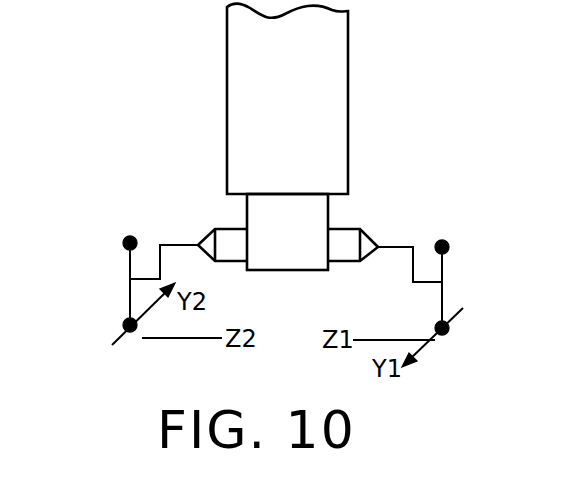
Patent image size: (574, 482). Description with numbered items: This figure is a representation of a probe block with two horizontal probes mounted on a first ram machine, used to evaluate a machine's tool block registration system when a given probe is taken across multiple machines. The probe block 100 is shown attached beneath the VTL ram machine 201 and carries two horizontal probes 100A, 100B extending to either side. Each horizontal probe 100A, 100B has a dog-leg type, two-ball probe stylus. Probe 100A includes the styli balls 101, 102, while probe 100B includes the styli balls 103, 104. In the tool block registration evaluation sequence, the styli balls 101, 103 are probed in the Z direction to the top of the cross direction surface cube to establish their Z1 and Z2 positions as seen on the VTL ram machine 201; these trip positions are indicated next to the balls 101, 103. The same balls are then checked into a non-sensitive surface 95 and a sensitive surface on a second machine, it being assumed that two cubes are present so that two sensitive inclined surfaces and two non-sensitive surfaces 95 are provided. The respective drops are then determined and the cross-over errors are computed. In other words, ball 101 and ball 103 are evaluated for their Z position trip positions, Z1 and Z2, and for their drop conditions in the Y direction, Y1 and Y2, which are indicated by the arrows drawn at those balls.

The VTL ram machine 201 is at (262, 152).
The probe block 100 is at (330, 211).
The horizontal probe 100A is at (345, 238).
The horizontal probe 100B is at (222, 233).
The styli ball 101 is at (450, 328).
The styli ball 102 is at (448, 247).
The styli ball 103 is at (123, 324).
The styli ball 104 is at (123, 243).
The non-sensitive surface 95 is at (573, 8).